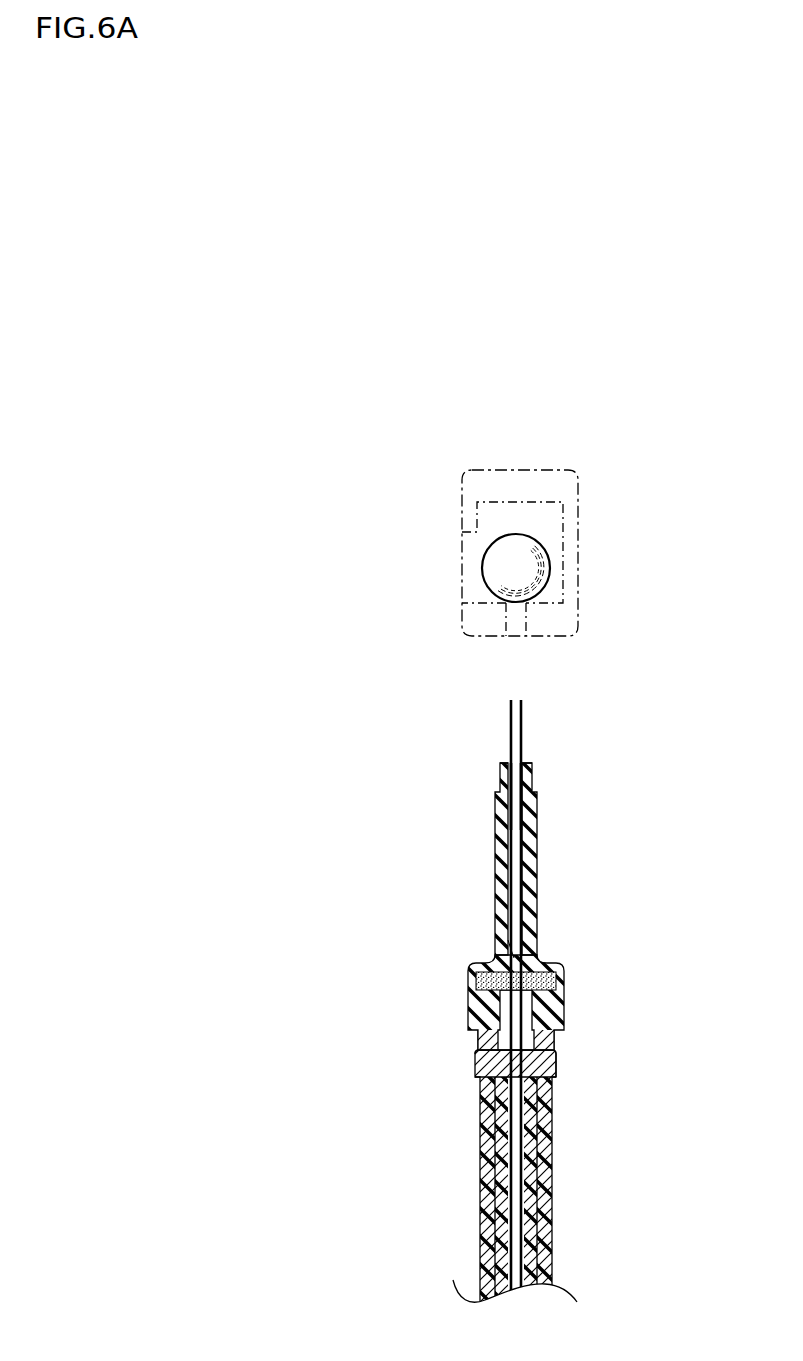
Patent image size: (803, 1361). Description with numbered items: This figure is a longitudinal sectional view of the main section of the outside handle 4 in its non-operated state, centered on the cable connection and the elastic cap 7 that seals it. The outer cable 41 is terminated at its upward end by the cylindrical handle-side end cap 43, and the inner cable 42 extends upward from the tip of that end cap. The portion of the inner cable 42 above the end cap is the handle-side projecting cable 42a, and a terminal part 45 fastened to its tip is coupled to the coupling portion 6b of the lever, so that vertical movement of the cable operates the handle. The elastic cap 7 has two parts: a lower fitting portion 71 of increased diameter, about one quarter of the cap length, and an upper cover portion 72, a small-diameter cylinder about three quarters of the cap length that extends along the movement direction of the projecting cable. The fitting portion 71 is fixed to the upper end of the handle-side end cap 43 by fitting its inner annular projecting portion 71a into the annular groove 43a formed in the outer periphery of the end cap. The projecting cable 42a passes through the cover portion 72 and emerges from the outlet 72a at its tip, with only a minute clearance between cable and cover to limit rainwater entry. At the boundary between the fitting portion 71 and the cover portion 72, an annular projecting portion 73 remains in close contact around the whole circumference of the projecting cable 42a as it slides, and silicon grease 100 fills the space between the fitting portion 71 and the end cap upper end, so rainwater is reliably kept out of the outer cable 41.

The outside handle 4 is at (515, 955).
The coupling portion 6b is at (537, 470).
The elastic cap 7 is at (526, 825).
The outer cable 41 is at (530, 1170).
The inner cable 42 is at (517, 1212).
The handle-side projecting cable 42a is at (521, 823).
The handle-side end cap 43 is at (515, 1169).
The annular groove 43a is at (562, 1028).
The terminal part 45 is at (482, 566).
The fitting portion 71 is at (520, 997).
The annular projecting portion 71a is at (496, 1040).
The cover portion 72 is at (495, 847).
The outlet 72a is at (511, 757).
The annular projecting portion 73 is at (519, 943).
The silicon grease 100 is at (556, 977).